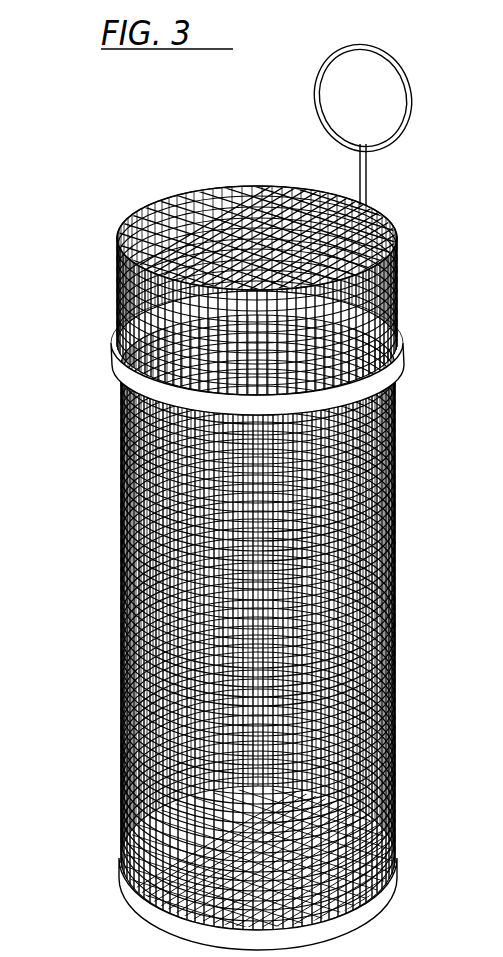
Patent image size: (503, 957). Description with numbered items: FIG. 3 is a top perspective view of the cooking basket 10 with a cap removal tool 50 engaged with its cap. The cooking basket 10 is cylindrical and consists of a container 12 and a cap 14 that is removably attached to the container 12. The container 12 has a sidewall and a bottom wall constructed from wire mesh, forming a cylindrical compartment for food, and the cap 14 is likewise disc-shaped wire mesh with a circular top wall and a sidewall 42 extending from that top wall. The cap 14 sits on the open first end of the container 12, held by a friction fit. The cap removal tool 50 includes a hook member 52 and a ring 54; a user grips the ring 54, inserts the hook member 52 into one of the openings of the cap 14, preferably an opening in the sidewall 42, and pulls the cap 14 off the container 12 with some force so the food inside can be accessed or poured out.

The cooking basket 10 is at (266, 483).
The container 12 is at (125, 635).
The cap 14 is at (143, 207).
The sidewall 42 is at (395, 300).
The cap removal tool 50 is at (380, 107).
The hook member 52 is at (352, 163).
The ring 54 is at (400, 77).